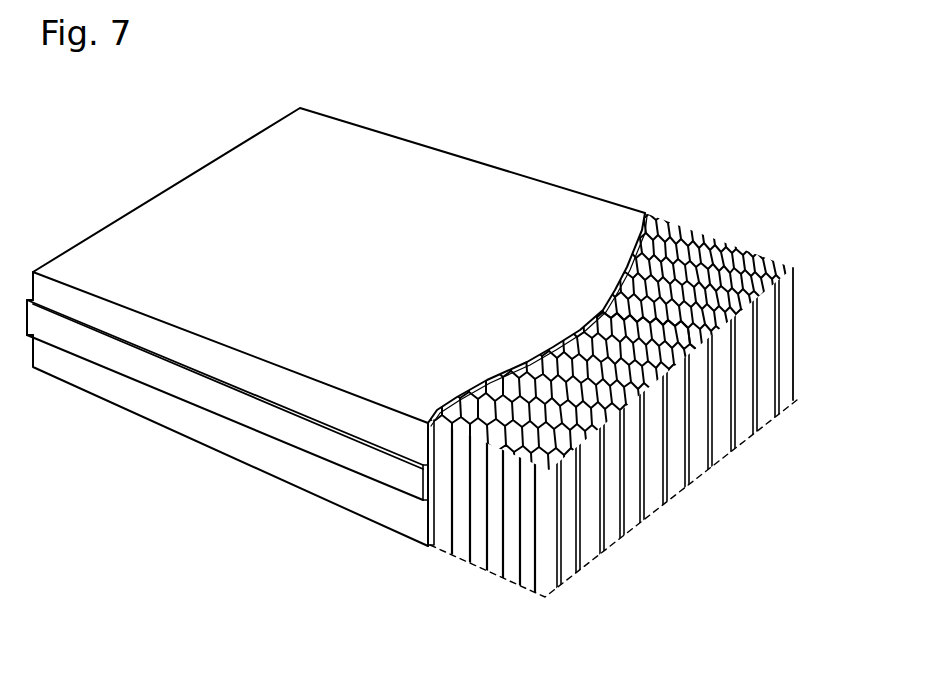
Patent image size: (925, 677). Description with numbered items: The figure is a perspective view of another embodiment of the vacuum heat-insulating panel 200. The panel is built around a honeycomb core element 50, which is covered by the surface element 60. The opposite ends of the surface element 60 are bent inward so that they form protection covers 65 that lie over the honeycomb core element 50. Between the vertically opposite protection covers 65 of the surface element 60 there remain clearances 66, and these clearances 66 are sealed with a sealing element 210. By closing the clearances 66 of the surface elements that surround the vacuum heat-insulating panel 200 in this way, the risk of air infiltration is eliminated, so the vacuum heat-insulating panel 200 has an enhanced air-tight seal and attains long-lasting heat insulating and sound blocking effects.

The vacuum heat-insulating panel 200 is at (184, 166).
The surface element 60 is at (462, 187).
The sealing element 210 is at (217, 397).
The protection covers 65 is at (372, 505).
The clearances 66 is at (430, 483).
The honeycomb core element 50 is at (653, 478).